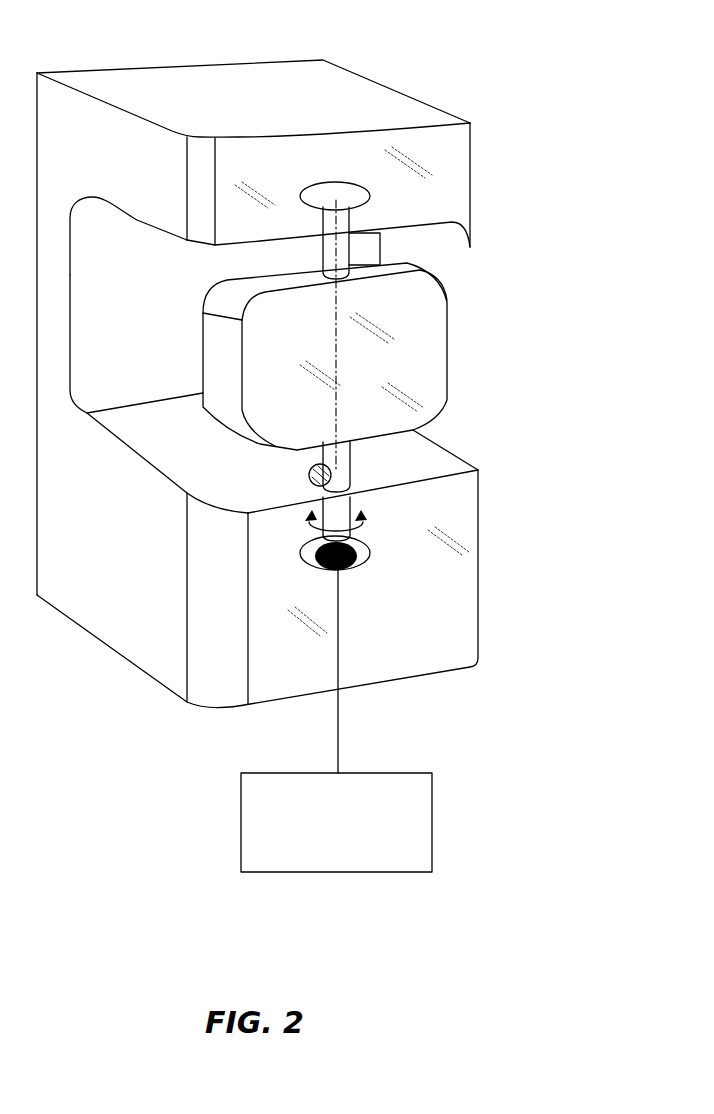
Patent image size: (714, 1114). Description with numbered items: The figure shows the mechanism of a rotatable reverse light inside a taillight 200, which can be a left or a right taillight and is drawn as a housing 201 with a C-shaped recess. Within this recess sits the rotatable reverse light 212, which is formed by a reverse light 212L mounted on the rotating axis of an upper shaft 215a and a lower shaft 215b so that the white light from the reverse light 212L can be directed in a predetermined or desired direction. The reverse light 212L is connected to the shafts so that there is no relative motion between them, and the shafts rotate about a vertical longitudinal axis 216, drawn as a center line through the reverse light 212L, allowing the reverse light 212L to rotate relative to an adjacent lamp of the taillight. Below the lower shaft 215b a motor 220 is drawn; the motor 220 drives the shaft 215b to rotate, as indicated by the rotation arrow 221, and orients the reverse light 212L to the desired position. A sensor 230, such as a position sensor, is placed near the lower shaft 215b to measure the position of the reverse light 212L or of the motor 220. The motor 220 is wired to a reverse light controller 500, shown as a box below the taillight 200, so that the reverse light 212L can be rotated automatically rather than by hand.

The taillight 200 is at (300, 365).
The housing 201 is at (450, 176).
The rotatable reverse light 212 is at (335, 361).
The reverse light 212L is at (437, 323).
The shaft 215a is at (353, 248).
The shaft 215b is at (353, 463).
The longitudinal axis 216 is at (337, 352).
The motor 220 is at (370, 560).
The rotation direction 221 is at (308, 533).
The sensor 230 is at (307, 471).
The reverse light controller 500 is at (336, 721).